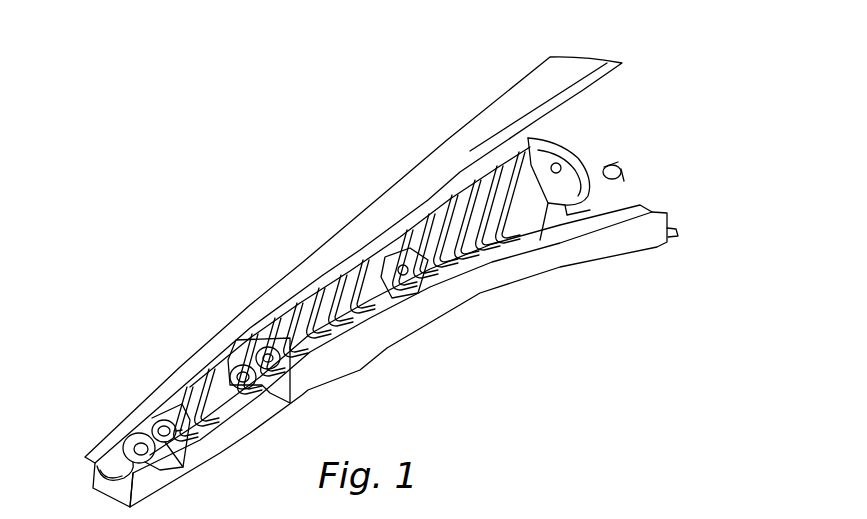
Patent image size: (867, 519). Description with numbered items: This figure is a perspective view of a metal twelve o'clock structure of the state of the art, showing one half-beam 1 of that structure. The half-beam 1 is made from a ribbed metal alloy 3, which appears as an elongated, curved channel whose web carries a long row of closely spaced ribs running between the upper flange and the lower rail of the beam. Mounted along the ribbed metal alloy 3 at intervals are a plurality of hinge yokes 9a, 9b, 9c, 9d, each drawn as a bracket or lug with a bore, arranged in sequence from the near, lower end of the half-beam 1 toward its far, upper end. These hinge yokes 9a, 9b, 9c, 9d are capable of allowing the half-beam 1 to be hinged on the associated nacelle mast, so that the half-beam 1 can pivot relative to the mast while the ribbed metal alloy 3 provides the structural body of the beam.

The half-beam 1 is at (258, 216).
The ribbed metal alloy 3 is at (386, 338).
The hinge yoke 9a is at (150, 410).
The hinge yoke 9b is at (247, 340).
The hinge yoke 9c is at (385, 257).
The hinge yoke 9d is at (583, 142).